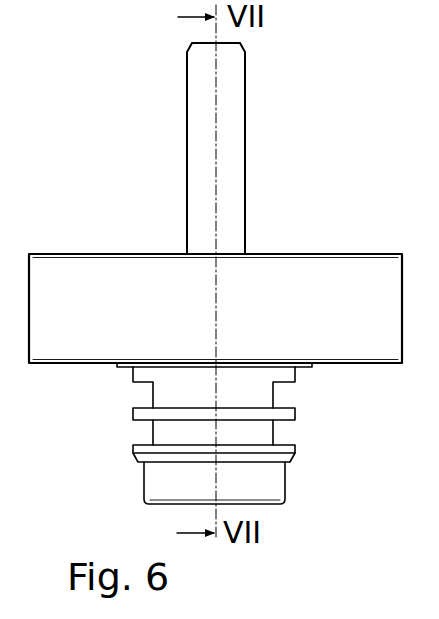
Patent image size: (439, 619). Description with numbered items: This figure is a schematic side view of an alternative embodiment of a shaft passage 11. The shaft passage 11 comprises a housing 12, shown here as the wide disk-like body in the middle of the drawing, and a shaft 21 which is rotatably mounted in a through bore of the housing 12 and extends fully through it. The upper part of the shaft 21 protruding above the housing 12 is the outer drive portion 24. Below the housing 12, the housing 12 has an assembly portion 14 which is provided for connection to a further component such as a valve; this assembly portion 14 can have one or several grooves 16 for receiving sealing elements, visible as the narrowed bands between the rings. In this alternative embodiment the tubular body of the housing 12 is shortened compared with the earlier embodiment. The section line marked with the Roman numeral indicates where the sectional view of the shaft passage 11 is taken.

The shaft passage 11 is at (309, 139).
The housing 12 is at (99, 238).
The assembly portion 14 is at (122, 437).
The groove 16 is at (295, 428).
The shaft 21 is at (262, 101).
The drive portion 24 is at (153, 140).